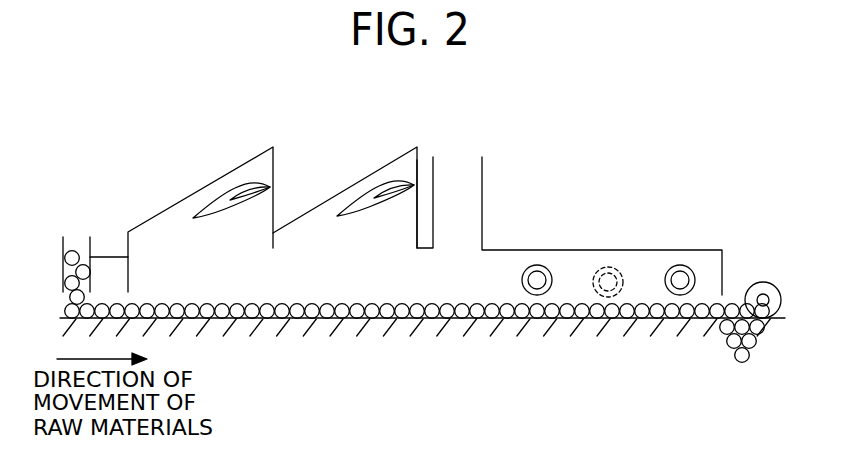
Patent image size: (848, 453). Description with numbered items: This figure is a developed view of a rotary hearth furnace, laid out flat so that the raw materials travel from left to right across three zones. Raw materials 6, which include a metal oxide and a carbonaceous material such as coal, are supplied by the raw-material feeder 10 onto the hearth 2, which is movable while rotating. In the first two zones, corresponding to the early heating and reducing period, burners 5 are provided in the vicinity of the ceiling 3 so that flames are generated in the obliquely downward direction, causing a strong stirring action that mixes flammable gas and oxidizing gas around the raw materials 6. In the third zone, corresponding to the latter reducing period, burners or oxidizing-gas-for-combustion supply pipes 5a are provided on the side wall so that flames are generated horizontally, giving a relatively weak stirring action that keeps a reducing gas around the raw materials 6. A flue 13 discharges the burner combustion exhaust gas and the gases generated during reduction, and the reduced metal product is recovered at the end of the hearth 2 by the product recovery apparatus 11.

The hearth 2 is at (460, 330).
The ceiling 3 is at (247, 163).
The burner 5 is at (230, 205).
The burner or oxidizing-gas-for-combustion supply pipe 5a is at (547, 268).
The raw materials 6 is at (250, 313).
The raw-material feeder 10 is at (78, 238).
The product recovery apparatus 11 is at (768, 280).
The flue 13 is at (460, 167).